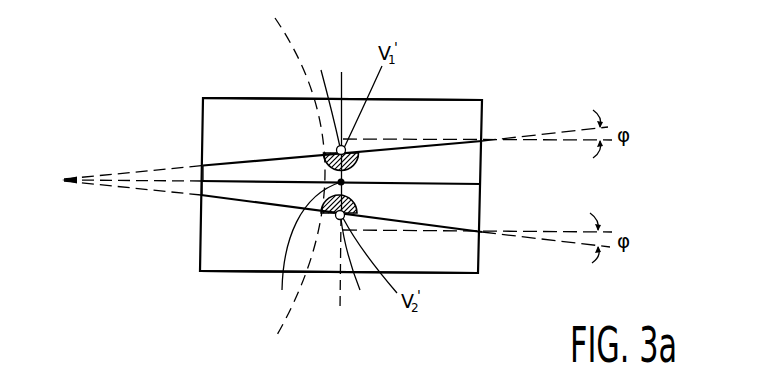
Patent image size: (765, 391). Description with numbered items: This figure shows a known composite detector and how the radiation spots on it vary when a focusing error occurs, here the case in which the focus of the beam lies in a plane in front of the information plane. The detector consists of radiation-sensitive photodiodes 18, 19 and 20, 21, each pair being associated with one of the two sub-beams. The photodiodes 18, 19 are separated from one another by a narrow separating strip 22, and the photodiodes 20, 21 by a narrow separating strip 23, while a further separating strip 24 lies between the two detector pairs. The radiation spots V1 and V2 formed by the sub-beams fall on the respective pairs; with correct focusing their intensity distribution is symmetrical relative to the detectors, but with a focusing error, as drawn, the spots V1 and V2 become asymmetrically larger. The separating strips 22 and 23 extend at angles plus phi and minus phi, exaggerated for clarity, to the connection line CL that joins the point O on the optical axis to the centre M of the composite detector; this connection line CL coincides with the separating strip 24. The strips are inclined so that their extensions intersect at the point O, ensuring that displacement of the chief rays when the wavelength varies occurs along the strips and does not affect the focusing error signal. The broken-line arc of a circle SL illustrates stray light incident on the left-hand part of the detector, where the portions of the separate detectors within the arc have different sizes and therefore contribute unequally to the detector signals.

The photodiode 18 is at (220, 125).
The photodiode 19 is at (216, 172).
The photodiode 20 is at (216, 192).
The photodiode 21 is at (220, 242).
The separating strip 22 is at (433, 142).
The separating strip 23 is at (433, 227).
The separating strip 24 is at (462, 185).
The point O is at (62, 183).
The connection line CL is at (109, 181).
The arc of a circle of stray light SL is at (277, 15).
The centre of the composite detector M is at (306, 247).
The radiation spot V1 is at (326, 94).
The radiation spot V2 is at (357, 267).